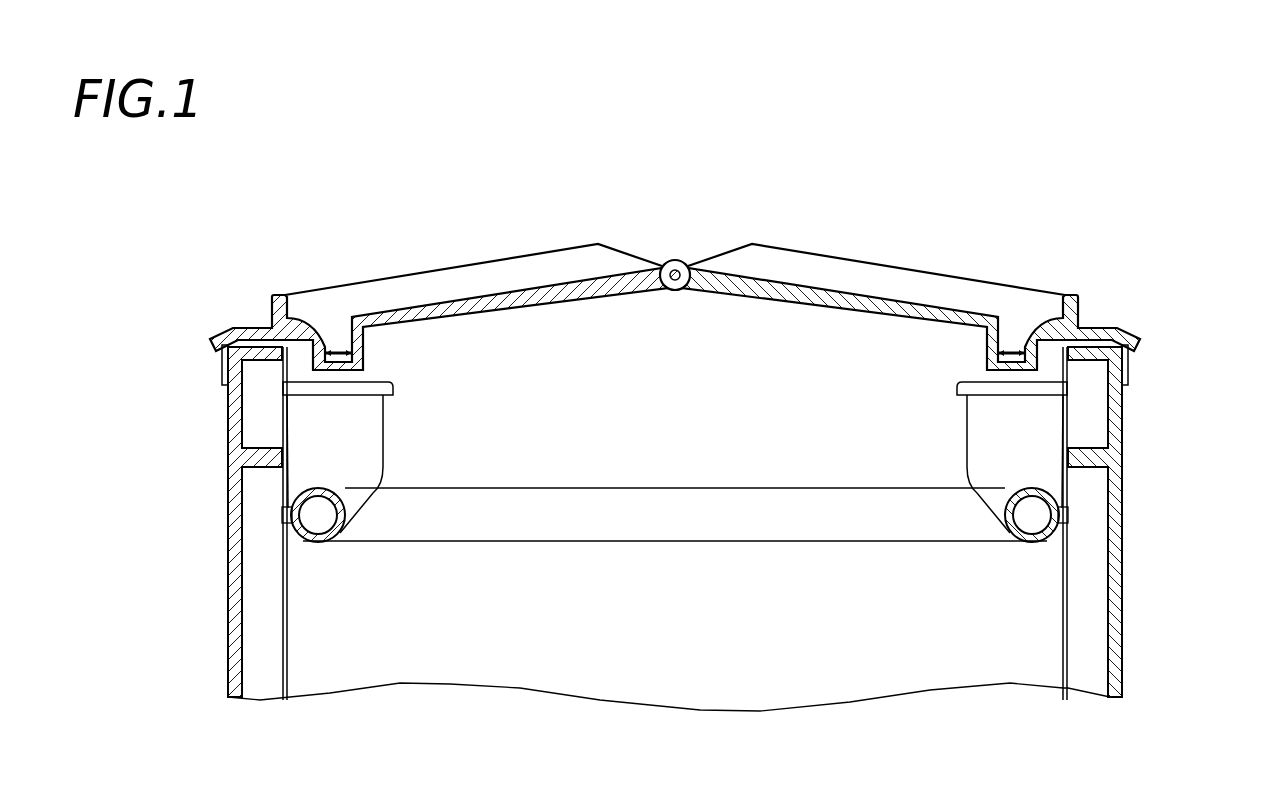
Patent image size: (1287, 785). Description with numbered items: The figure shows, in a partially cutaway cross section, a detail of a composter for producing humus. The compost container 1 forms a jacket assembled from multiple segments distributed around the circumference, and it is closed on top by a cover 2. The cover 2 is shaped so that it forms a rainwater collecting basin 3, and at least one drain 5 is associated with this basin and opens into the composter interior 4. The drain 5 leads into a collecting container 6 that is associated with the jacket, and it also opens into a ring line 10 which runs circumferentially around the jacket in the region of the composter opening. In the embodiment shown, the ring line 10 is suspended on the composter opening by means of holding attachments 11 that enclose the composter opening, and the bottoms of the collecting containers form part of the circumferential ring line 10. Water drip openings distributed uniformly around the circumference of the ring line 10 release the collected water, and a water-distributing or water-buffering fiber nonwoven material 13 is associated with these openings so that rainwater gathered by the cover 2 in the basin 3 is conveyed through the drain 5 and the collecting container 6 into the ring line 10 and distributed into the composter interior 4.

The compost container 1 is at (1180, 392).
The cover 2 is at (724, 212).
The rainwater collecting basin 3 is at (305, 308).
The composter interior 4 is at (770, 633).
The drain 5 is at (365, 360).
The collecting container 6 is at (345, 447).
The ring line 10 is at (637, 523).
The holding attachments 11 is at (222, 367).
The fiber nonwoven material 13 is at (1062, 588).